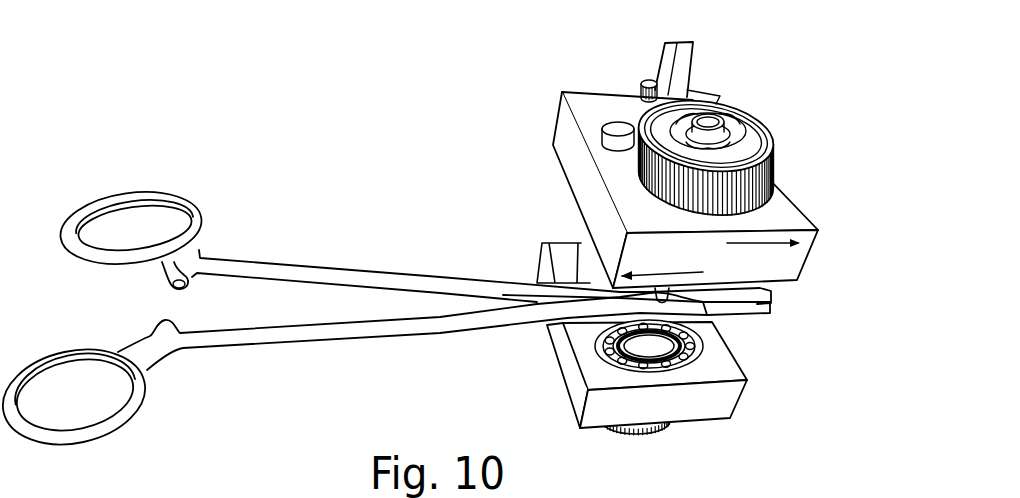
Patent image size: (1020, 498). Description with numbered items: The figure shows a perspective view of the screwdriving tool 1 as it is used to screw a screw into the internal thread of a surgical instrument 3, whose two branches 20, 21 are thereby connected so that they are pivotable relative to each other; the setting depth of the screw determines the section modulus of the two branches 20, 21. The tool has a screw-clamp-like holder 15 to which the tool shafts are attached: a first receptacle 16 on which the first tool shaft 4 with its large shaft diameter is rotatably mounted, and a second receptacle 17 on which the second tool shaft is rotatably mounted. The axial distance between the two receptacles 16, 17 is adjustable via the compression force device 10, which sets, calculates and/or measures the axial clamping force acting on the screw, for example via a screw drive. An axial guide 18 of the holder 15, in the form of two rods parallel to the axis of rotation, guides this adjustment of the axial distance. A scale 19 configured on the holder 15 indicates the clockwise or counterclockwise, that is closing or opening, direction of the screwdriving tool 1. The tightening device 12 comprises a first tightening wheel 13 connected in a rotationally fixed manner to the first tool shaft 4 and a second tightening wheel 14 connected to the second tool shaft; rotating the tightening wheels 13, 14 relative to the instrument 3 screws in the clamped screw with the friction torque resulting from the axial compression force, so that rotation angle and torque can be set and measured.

The screwdriving tool 1 is at (772, 97).
The surgical instrument 3 is at (385, 320).
The first tool shaft 4 is at (700, 352).
The compression force device 10 is at (690, 50).
The tightening device 12 is at (757, 271).
The first tightening wheel 13 is at (672, 422).
The second tightening wheel 14 is at (772, 180).
The holder 15 is at (625, 260).
The first receptacle 16 is at (575, 372).
The second receptacle 17 is at (558, 130).
The axial guide 18 is at (578, 257).
The scale 19 is at (795, 258).
The first branch 20 is at (375, 280).
The second branch 21 is at (326, 333).